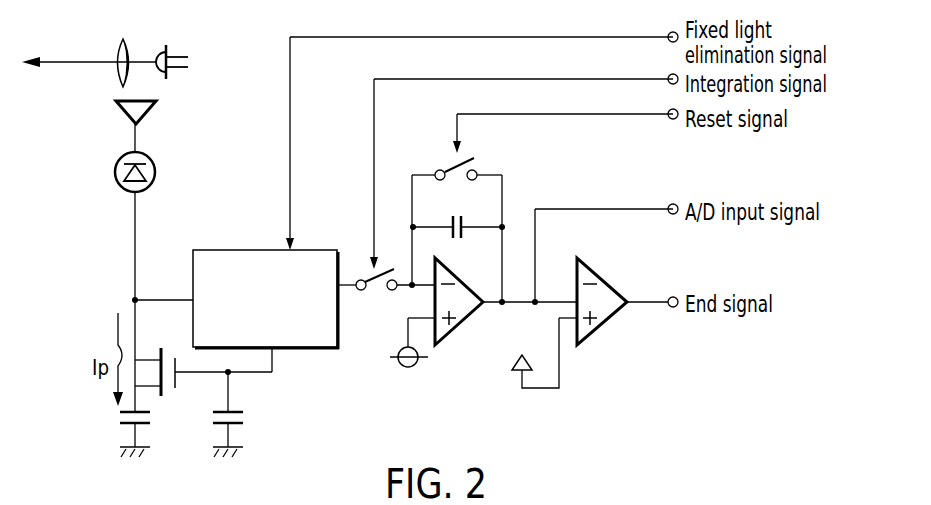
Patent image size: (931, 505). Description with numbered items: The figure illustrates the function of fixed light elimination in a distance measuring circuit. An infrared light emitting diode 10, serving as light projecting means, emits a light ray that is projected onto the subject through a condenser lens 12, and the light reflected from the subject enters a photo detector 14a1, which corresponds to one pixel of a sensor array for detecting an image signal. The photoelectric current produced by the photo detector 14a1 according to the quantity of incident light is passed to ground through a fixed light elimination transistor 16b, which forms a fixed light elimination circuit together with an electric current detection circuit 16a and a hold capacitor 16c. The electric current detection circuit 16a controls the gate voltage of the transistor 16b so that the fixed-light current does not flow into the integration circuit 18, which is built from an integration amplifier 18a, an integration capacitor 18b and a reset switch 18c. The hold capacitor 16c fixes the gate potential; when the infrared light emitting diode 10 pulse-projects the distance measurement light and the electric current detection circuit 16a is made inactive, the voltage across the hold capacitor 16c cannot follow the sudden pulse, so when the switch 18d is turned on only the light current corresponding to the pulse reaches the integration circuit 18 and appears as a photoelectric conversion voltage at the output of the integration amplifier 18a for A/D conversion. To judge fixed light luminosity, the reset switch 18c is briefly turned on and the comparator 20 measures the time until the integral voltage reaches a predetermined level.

The infrared light emitting diode 10 is at (160, 52).
The condenser lens 12 is at (118, 46).
The photo detector 14a1 is at (156, 172).
The electric current detection circuit 16a is at (323, 350).
The fixed light elimination transistor 16b is at (165, 400).
The hold capacitor 16c is at (245, 420).
The integration circuit 18 is at (457, 288).
The integration amplifier 18a is at (458, 335).
The integration capacitor 18b is at (458, 240).
The reset switch 18c is at (478, 162).
The switch 18d is at (375, 296).
The comparator 20 is at (596, 333).